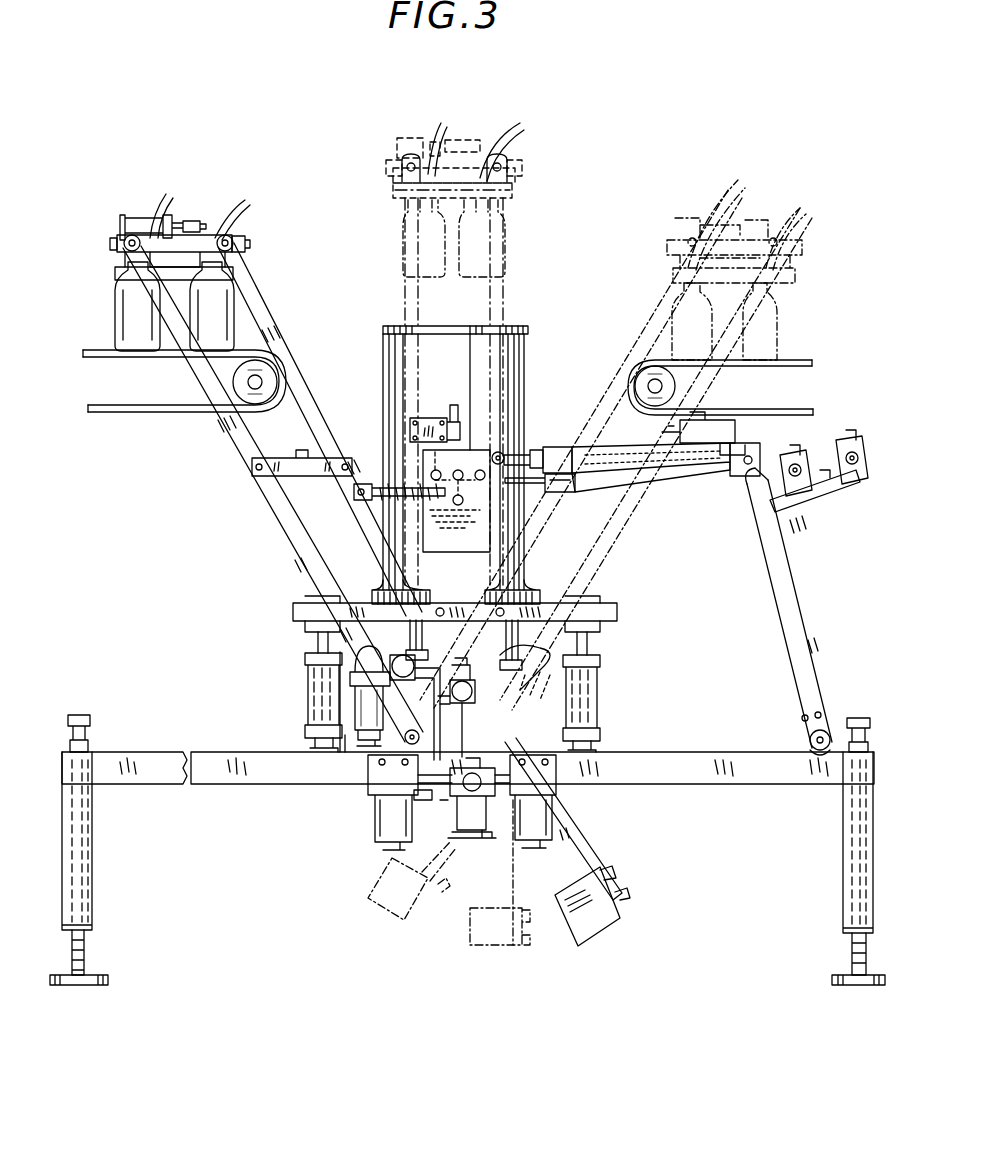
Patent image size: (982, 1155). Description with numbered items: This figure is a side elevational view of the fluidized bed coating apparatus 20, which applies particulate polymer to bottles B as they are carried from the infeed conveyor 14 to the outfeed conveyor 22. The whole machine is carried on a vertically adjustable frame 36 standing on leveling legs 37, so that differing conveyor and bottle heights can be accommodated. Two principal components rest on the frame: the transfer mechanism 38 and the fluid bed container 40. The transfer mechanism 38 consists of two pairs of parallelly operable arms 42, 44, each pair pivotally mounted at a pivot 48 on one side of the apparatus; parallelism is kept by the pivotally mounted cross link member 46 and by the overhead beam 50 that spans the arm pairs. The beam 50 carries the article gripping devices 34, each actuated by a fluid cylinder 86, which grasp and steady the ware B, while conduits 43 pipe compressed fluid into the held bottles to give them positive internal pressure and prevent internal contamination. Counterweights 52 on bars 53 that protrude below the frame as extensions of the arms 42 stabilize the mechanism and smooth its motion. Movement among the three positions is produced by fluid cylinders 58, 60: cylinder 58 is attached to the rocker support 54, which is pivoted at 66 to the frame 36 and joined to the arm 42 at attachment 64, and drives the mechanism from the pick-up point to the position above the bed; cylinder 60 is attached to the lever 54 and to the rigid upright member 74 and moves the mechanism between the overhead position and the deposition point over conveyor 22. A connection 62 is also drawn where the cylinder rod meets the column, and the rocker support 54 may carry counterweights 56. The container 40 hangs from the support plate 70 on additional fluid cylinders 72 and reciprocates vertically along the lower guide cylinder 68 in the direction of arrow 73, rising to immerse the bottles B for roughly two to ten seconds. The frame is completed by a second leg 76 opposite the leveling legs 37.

The fluidized bed coating apparatus 20 is at (622, 86).
The conveyor 14 is at (146, 408).
The conveyor 22 is at (792, 410).
The article gripping device 34 is at (377, 156).
The vertically adjustable frame 36 is at (165, 752).
The leveling legs 37 is at (92, 882).
The transfer mechanism 38 is at (262, 528).
The fluid bed container 40 is at (526, 334).
The arm 42 is at (270, 333).
The conduits 43 is at (160, 203).
The arm 44 is at (245, 448).
The cross link member 46 is at (312, 472).
The pivot 48 is at (420, 735).
The overhead beam 50 is at (240, 232).
The counterweights 52 is at (600, 920).
The bars 53 is at (590, 836).
The rocker support 54 is at (786, 568).
The counterweights 56 is at (860, 480).
The fluid cylinder 58 is at (586, 488).
The fluid cylinder 60 is at (628, 460).
The valve 62 is at (504, 455).
The attachment 64 is at (370, 482).
The pivot 66 is at (816, 738).
The lower guide cylinder 68 is at (540, 688).
The support plate 70 is at (620, 612).
The fluid cylinders 72 is at (306, 690).
The arrow 73 is at (455, 382).
The rigid upright member 74 is at (476, 594).
The frame leg 76 is at (845, 860).
The fluid cylinder 86 is at (168, 220).
The ware B is at (205, 335).